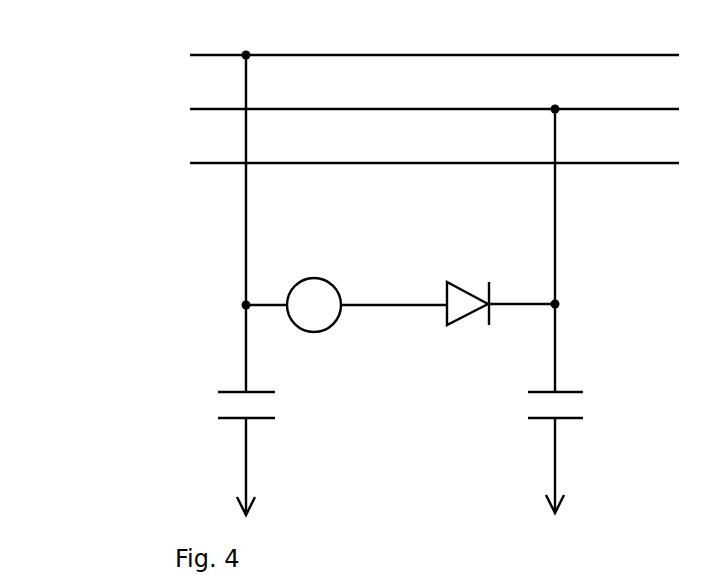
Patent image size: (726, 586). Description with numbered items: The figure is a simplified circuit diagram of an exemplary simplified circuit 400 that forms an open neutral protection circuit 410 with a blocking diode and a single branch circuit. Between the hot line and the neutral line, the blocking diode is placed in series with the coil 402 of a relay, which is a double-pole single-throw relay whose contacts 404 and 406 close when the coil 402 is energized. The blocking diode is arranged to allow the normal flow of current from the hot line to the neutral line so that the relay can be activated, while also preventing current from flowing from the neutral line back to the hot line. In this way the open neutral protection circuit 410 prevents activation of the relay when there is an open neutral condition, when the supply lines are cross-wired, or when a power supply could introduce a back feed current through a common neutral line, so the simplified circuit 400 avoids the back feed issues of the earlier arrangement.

The simplified circuit 400 is at (96, 54).
The open neutral protection circuit 410 is at (125, 205).
The coil 402 is at (306, 277).
The contact 404 is at (261, 420).
The contact 406 is at (541, 420).